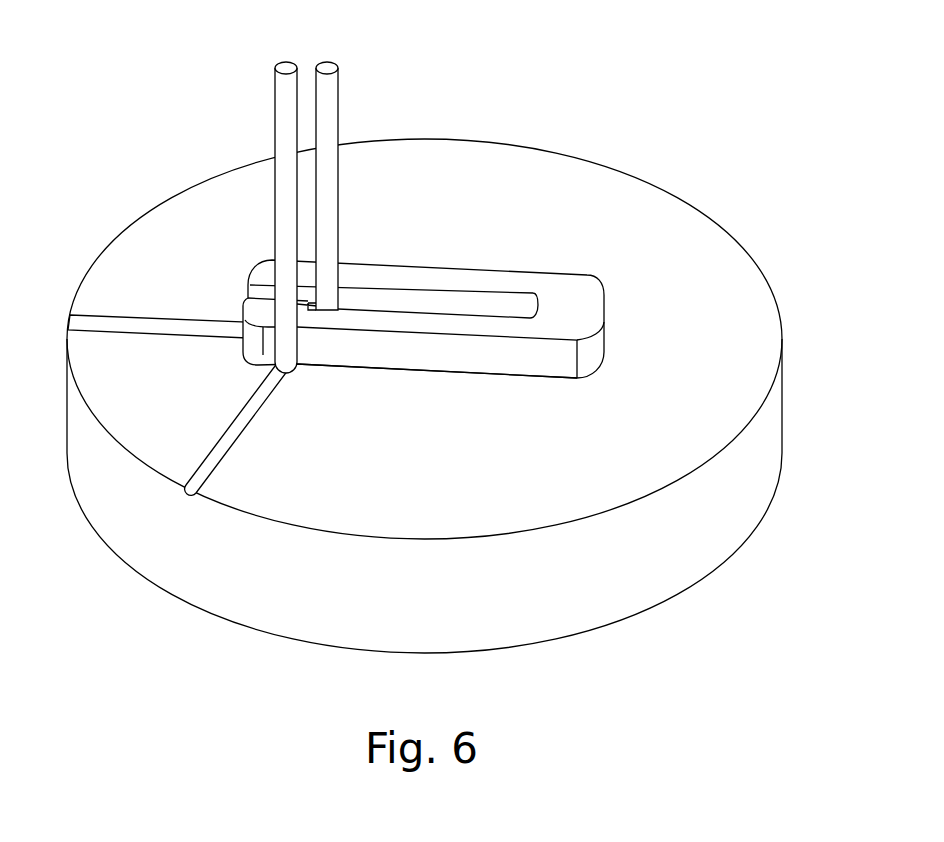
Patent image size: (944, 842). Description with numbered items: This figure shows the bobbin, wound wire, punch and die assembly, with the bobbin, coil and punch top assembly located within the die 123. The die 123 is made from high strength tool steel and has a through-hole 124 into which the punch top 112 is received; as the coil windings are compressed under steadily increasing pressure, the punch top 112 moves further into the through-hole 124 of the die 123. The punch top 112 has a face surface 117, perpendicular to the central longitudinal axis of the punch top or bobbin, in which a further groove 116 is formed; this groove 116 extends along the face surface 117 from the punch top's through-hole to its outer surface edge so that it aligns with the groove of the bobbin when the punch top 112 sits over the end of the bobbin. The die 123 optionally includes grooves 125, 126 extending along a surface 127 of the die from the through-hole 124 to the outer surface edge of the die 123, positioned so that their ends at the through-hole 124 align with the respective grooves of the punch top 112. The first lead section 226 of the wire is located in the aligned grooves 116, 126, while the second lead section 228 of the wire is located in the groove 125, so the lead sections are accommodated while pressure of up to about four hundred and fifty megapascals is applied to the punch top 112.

The punch top 112 is at (437, 394).
The further groove 116 is at (268, 293).
The face surface 117 is at (473, 278).
The die 123 is at (695, 190).
The through-hole 124 is at (498, 378).
The groove 125 is at (222, 462).
The groove 126 is at (137, 315).
The surface 127 is at (752, 362).
The first lead section 226 is at (330, 87).
The second lead section 228 is at (283, 95).